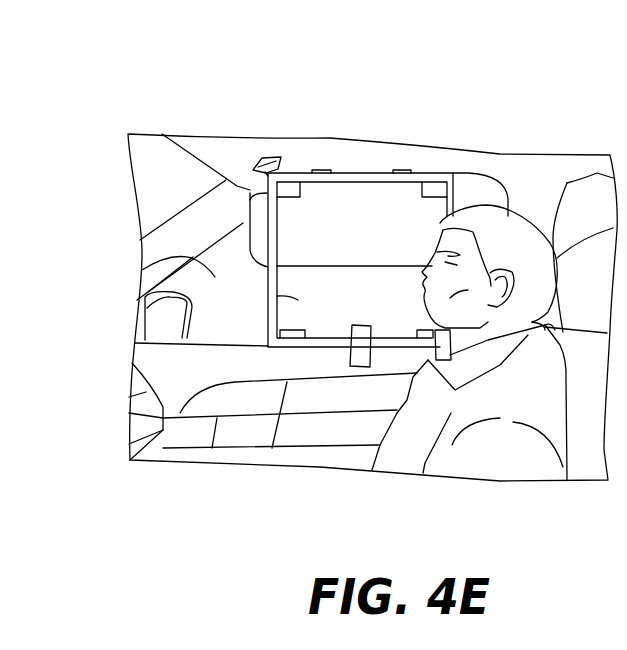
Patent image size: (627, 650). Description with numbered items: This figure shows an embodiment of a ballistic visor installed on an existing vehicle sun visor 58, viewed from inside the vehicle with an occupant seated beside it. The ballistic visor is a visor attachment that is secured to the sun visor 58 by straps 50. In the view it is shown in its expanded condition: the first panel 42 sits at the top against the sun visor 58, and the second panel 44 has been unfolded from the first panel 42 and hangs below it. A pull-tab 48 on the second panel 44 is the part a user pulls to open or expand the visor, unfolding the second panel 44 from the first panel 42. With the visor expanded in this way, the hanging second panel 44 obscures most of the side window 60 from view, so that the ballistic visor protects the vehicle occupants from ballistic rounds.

The first panel 42 is at (320, 217).
The second panel 44 is at (268, 306).
The pull-tab 48 is at (358, 338).
The straps 50 is at (403, 170).
The vehicle sun visor 58 is at (260, 232).
The side window 60 is at (142, 270).